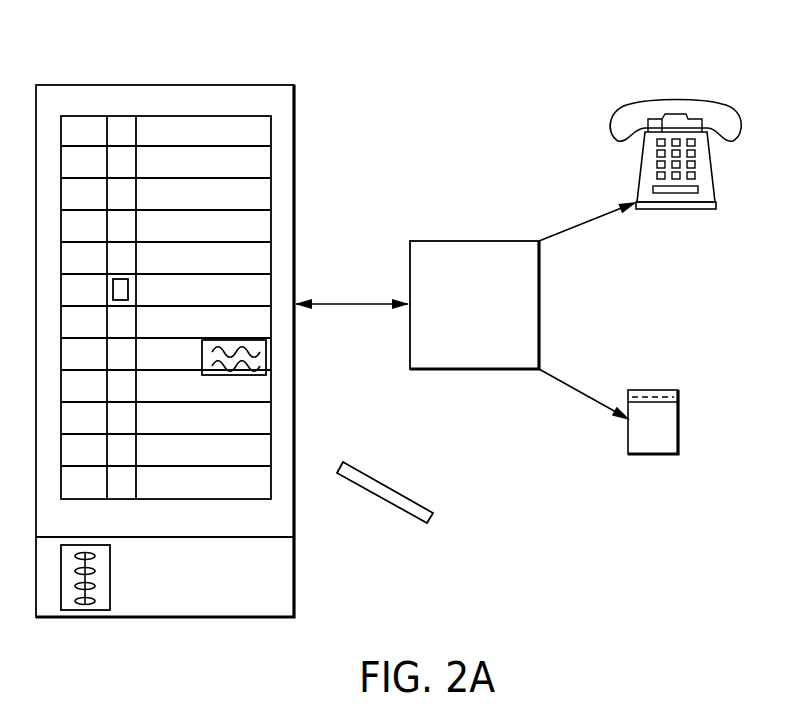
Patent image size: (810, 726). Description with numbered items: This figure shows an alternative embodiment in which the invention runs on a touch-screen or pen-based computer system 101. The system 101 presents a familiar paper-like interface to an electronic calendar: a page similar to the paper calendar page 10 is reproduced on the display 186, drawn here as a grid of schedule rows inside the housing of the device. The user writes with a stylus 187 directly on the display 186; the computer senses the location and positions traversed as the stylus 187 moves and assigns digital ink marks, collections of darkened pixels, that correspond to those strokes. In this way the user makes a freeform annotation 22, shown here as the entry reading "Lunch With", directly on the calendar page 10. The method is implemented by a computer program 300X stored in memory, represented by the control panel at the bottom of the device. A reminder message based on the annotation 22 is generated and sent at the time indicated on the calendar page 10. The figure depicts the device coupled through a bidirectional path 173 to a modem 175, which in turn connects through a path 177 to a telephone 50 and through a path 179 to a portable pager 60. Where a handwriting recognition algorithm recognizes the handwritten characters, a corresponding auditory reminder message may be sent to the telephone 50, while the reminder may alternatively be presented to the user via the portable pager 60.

The pen-based computer system 101 is at (148, 24).
The calendar page 10 is at (165, 116).
The display 186 is at (294, 86).
The freeform input annotation 22 is at (272, 291).
The computer program 300X is at (110, 584).
The bidirectional communication link 173 is at (349, 303).
The modem 175 is at (460, 240).
The communication link to telephone 177 is at (560, 232).
The communication link to pager 179 is at (561, 380).
The telephone 50 is at (678, 210).
The portable pager 60 is at (653, 455).
The stylus 187 is at (400, 510).